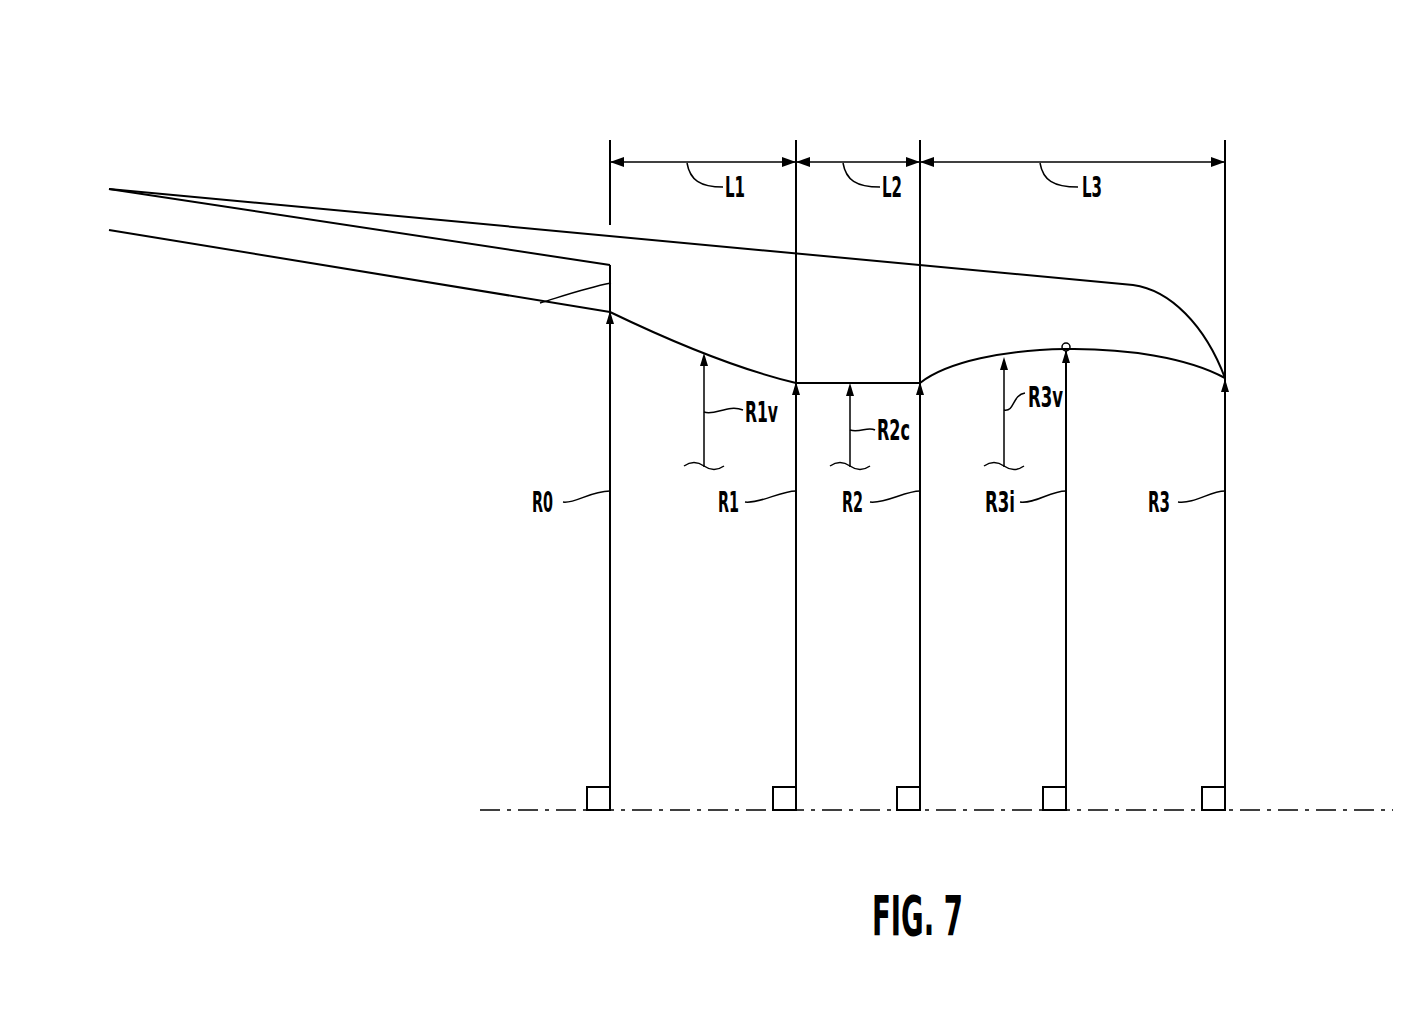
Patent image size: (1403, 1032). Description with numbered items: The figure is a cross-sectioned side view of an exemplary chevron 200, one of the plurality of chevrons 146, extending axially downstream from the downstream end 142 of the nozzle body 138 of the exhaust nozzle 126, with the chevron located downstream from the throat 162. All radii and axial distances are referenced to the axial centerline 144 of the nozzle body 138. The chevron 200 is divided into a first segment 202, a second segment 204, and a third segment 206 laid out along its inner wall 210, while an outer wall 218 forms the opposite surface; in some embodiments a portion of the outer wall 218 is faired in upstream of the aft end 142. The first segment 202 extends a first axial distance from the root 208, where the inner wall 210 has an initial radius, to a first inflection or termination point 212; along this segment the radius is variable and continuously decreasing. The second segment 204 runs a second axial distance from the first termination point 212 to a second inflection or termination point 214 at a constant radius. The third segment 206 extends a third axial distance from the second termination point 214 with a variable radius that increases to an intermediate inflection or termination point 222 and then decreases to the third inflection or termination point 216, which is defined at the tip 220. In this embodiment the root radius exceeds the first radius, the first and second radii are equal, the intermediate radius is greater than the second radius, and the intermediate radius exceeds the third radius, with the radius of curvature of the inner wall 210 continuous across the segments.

The exhaust nozzle 126 is at (398, 281).
The nozzle body 138 is at (296, 243).
The downstream end 142 is at (540, 303).
The axial centerline 144 is at (1155, 812).
The plurality of chevrons 146 is at (995, 130).
The throat 162 is at (282, 523).
The chevron 200 is at (956, 110).
The first segment 202 is at (654, 156).
The second segment 204 is at (829, 156).
The third segment 206 is at (1008, 154).
The root 208 is at (607, 316).
The inner wall 210 is at (657, 333).
The first inflection or termination point 212 is at (798, 380).
The second inflection or termination point 214 is at (923, 380).
The third inflection or termination point 216 is at (1228, 379).
The outer wall 218 is at (458, 220).
The tip 220 is at (1234, 386).
The intermediate inflection or termination point 222 is at (1068, 344).